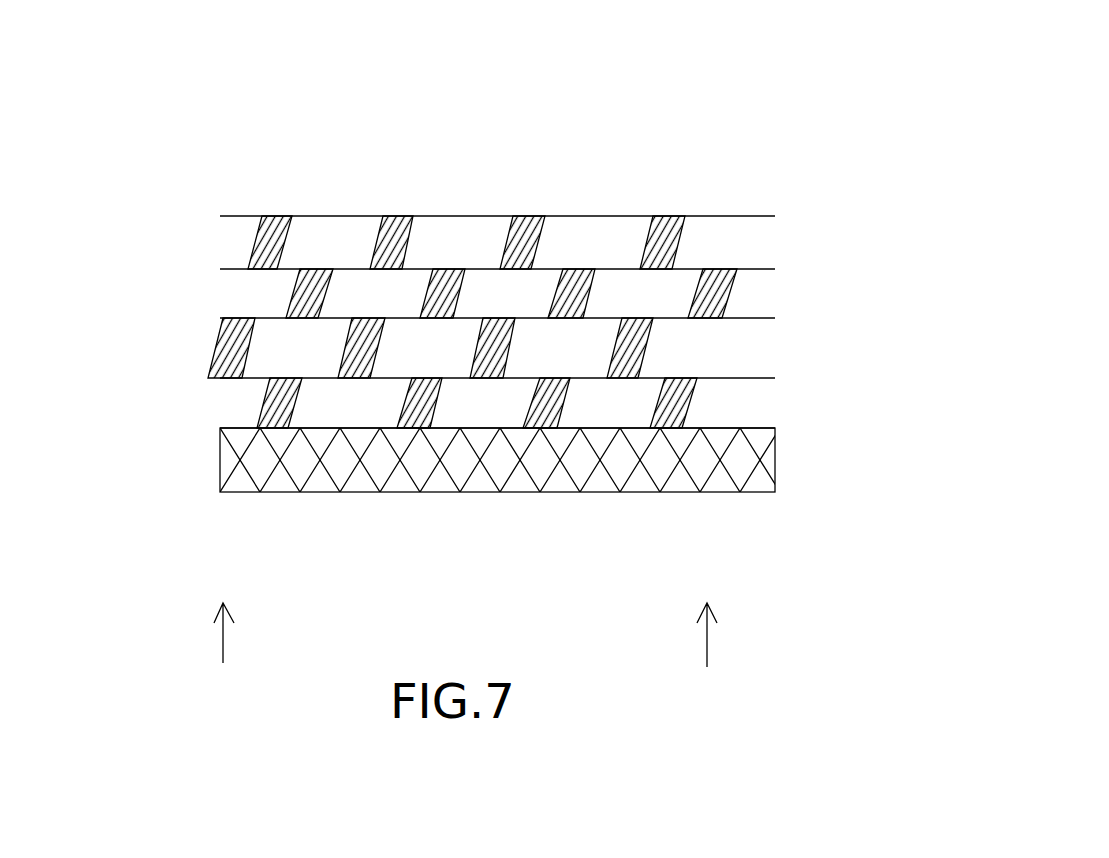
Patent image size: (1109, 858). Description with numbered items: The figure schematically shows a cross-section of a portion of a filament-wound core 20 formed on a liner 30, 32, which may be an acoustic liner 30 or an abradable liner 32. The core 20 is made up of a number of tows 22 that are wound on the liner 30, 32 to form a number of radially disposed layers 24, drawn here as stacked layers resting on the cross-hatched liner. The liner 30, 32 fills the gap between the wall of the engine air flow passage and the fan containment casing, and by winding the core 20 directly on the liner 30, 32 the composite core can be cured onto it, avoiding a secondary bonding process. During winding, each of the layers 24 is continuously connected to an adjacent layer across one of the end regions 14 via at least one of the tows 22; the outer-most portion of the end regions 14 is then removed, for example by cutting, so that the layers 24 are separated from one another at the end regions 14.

The core 20 is at (735, 45).
The tows 22 is at (420, 216).
The radially disposed layers 24 is at (192, 242).
The acoustic liner 30 is at (723, 473).
The abradable liner 32 is at (500, 460).
The end regions 14 is at (467, 653).